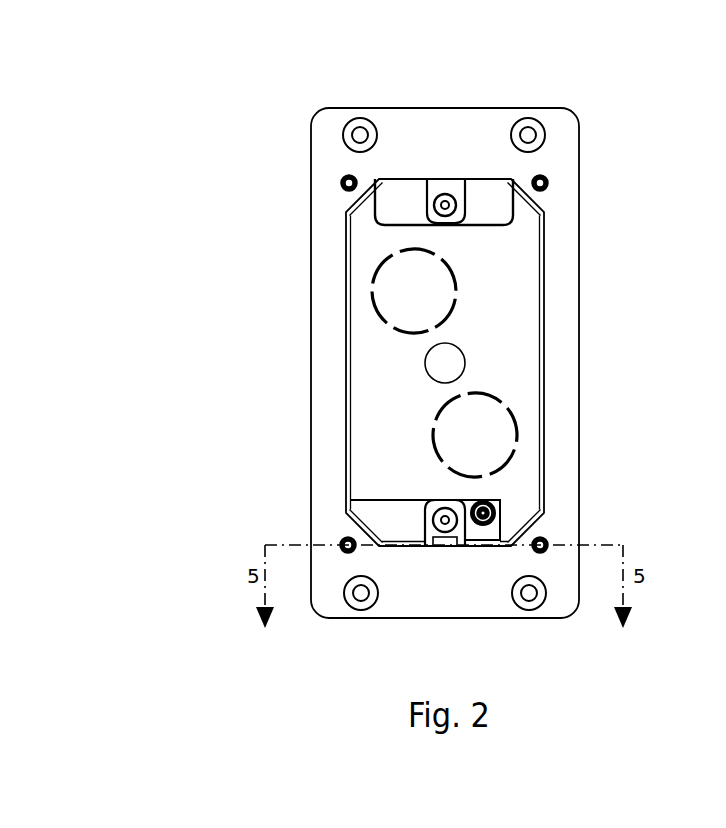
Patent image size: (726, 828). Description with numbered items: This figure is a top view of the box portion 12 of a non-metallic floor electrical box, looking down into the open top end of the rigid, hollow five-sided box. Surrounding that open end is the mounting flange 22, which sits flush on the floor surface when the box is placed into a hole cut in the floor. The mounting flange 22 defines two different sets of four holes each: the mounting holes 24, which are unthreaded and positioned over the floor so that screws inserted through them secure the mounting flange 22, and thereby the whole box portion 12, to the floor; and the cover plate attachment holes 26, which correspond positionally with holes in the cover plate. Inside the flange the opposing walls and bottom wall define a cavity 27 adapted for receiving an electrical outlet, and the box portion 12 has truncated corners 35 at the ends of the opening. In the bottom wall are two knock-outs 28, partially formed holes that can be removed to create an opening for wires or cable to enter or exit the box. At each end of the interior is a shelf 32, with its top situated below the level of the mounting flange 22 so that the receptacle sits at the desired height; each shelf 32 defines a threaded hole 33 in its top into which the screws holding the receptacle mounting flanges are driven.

The box portion 12 is at (283, 129).
The mounting flange 22 is at (563, 270).
The mounting holes 24 is at (541, 128).
The cover plate attachment holes 26 is at (546, 177).
The cavity 27 is at (502, 333).
The knock-outs 28 is at (498, 425).
The shelves 32 is at (433, 208).
The threaded hole 33 is at (441, 213).
The truncated corners 35 is at (365, 530).